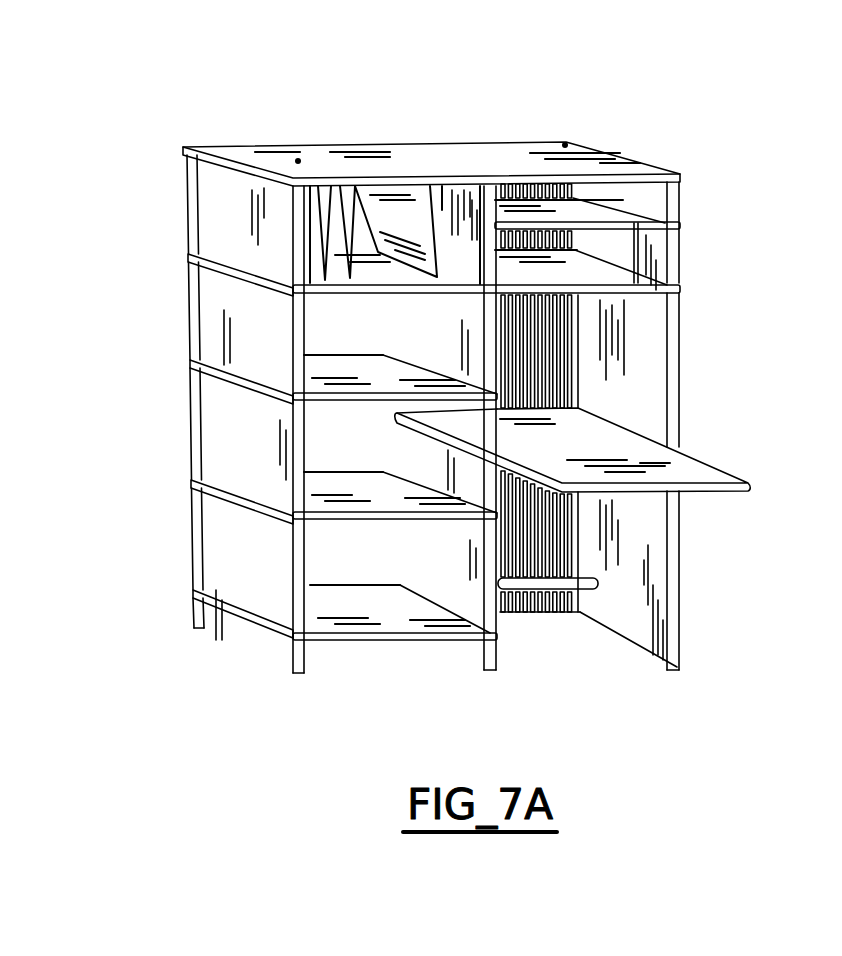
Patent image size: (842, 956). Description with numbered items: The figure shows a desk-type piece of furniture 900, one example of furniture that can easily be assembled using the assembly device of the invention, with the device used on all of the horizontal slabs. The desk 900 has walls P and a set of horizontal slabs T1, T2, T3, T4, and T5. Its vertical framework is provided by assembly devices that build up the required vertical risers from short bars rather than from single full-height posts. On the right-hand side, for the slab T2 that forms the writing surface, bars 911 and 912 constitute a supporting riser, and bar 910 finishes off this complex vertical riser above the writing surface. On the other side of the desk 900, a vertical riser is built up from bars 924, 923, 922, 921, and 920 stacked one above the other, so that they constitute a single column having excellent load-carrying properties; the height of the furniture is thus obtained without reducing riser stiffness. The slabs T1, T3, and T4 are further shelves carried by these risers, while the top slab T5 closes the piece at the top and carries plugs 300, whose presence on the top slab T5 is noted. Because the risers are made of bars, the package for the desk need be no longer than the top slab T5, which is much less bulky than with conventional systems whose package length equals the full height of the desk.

The desk-type piece of furniture 900 is at (732, 278).
The plug 300 is at (200, 148).
The slab T1 is at (352, 377).
The slab T2 is at (700, 475).
The slab T3 is at (622, 279).
The slab T4 is at (677, 195).
The top slab T5 is at (414, 153).
The wall P is at (213, 228).
The bar 910 is at (678, 240).
The bar 911 is at (678, 366).
The bar 912 is at (682, 557).
The bar 920 is at (192, 197).
The bar 921 is at (193, 307).
The bar 922 is at (193, 408).
The bar 923 is at (194, 521).
The bar 924 is at (198, 617).